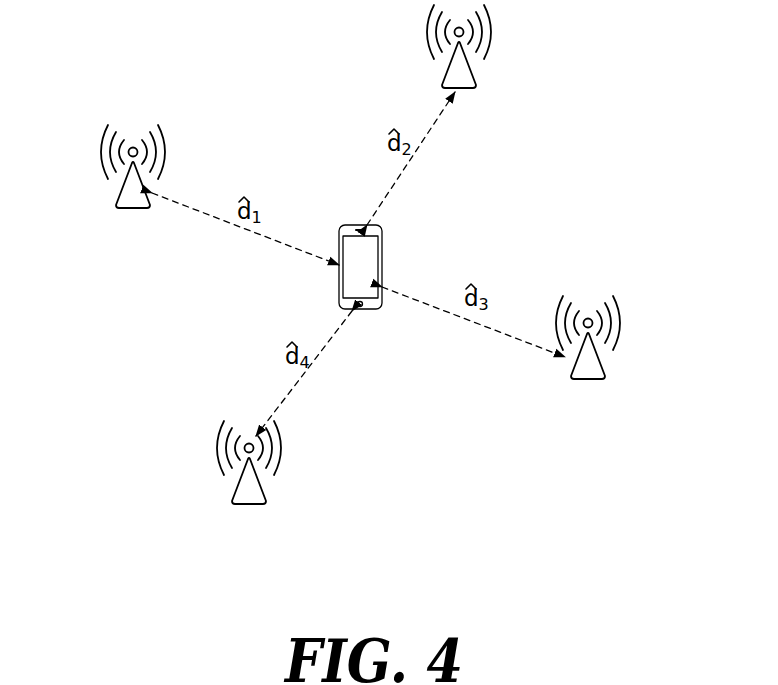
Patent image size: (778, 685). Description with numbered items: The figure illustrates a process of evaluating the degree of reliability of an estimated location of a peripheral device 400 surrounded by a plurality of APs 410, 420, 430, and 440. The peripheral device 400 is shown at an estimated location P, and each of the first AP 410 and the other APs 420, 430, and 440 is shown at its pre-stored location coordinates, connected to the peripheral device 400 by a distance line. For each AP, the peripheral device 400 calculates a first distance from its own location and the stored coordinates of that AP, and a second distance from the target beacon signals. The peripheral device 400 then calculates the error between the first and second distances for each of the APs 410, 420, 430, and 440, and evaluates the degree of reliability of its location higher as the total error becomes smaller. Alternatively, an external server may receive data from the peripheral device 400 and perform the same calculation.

The peripheral device 400 is at (352, 226).
The first AP 410 is at (117, 197).
The AP 420 is at (446, 80).
The AP 430 is at (601, 358).
The AP 440 is at (264, 490).